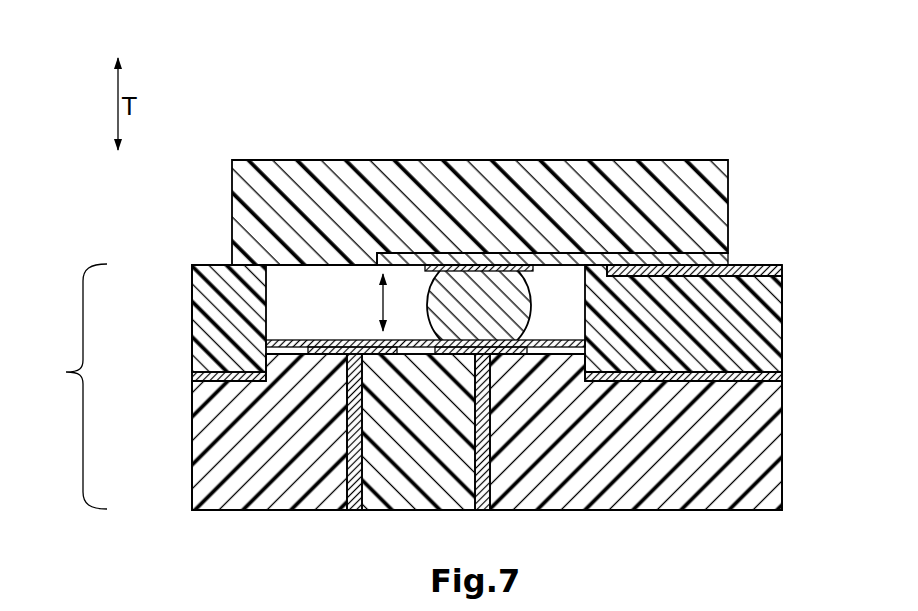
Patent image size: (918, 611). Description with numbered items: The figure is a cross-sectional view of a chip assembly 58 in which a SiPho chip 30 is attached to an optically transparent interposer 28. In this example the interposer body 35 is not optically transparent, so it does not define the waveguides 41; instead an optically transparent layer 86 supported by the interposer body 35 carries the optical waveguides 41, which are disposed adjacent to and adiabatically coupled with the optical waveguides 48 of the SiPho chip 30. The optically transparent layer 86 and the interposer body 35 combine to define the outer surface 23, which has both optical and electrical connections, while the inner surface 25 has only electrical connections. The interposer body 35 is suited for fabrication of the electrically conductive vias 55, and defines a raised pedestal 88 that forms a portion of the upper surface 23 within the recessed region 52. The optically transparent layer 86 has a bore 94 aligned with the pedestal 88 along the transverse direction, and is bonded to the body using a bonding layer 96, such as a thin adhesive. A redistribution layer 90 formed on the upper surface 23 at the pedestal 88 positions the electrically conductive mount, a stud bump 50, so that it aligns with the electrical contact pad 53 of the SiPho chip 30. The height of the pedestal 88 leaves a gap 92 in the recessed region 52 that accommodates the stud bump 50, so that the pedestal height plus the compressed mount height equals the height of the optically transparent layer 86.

The assembly 58 is at (232, 100).
The interposer 28 is at (402, 387).
The SiPho chip 30 is at (393, 160).
The gap 92 is at (420, 256).
The electrical contact pad 53 is at (498, 266).
The stud bump 50 is at (532, 302).
The optically transparent layer 86 is at (783, 303).
The optical waveguides of the SiPho chip 48 is at (683, 265).
The optical waveguides 41 is at (743, 266).
The bore 94 is at (250, 293).
The recessed region 52 is at (332, 284).
The raised pedestal 88 is at (245, 371).
The bonding layer 96 is at (750, 372).
The outer surface 23 is at (292, 340).
The redistribution layer 90 is at (556, 353).
The interposer body 35 is at (783, 412).
The electrically conductive vias 55 is at (347, 433).
The inner surface 25 is at (625, 510).